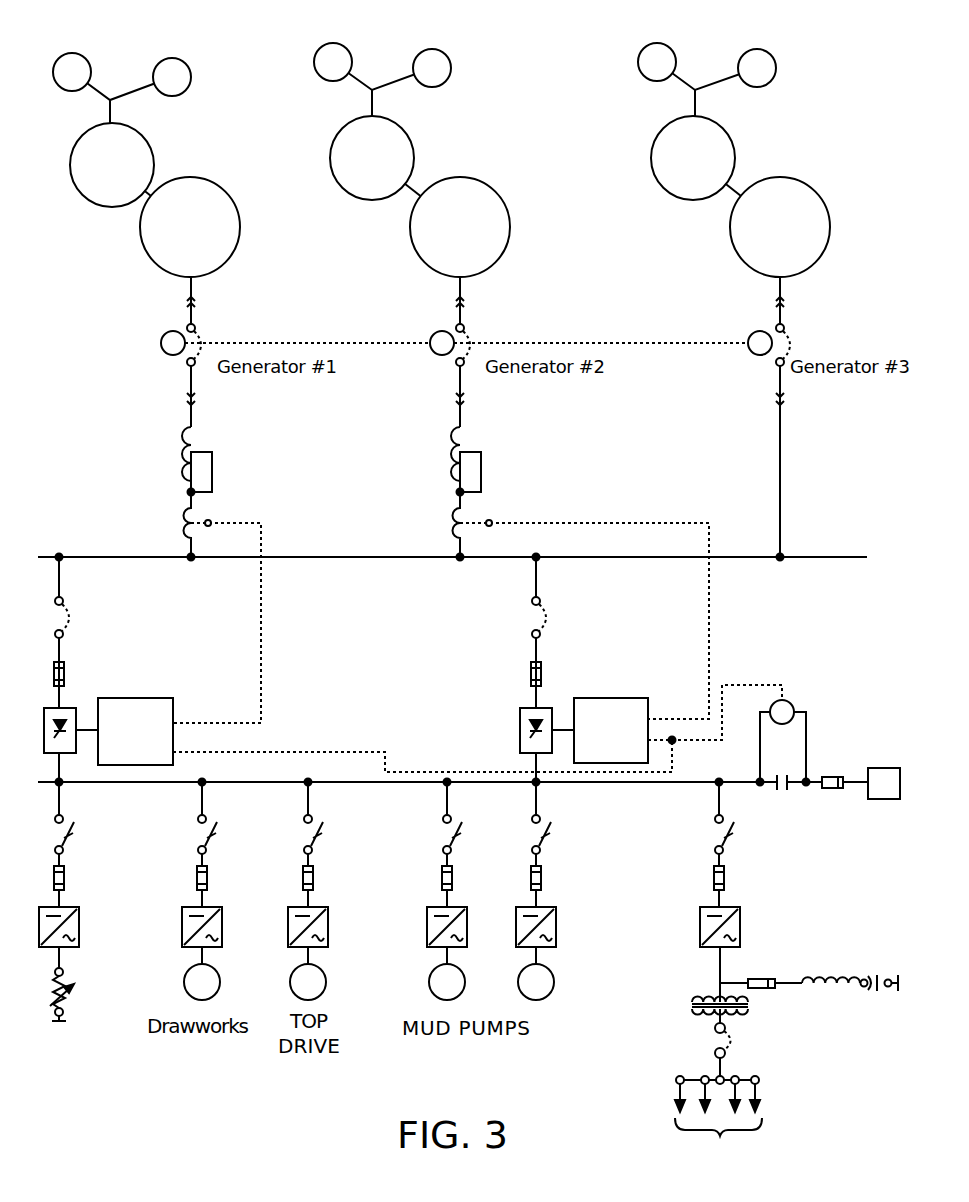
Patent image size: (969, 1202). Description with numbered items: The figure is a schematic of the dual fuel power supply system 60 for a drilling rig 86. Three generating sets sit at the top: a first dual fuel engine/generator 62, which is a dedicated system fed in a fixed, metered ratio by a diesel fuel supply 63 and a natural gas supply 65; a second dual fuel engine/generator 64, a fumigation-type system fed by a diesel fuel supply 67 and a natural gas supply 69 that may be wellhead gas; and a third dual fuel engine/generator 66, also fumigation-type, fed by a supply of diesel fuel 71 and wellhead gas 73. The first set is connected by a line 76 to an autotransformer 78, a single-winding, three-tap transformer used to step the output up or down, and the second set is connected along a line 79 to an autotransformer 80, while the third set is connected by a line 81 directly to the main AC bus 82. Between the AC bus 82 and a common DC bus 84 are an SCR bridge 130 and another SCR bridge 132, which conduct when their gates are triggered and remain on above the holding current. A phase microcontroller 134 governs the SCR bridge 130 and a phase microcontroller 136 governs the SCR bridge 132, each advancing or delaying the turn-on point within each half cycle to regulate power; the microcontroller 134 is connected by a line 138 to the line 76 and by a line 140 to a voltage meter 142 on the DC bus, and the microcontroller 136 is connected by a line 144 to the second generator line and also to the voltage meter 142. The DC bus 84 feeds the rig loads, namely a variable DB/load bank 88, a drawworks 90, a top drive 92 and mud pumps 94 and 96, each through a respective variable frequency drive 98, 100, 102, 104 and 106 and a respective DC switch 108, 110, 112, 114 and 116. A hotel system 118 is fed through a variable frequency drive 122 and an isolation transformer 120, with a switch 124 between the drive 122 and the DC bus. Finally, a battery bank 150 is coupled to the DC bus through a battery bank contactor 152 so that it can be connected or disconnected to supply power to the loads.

The power supply system 60 is at (822, 622).
The first dual fuel engine/generator 62 is at (125, 220).
The diesel fuel supply 63 is at (83, 55).
The second dual fuel engine/generator 64 is at (394, 211).
The natural gas supply 65 is at (190, 71).
The third dual fuel engine/generator 66 is at (716, 211).
The diesel fuel supply 67 is at (345, 46).
The natural gas supply 69 is at (451, 63).
The supply of diesel fuel 71 is at (669, 47).
The wellhead gas 73 is at (775, 63).
The line 76 is at (183, 397).
The autotransformer 78 is at (189, 477).
The line 79 is at (455, 398).
The autotransformer 80 is at (455, 472).
The line 81 is at (780, 445).
The main AC bus 82 is at (758, 557).
The common DC bus 84 is at (699, 782).
The drilling rig 86 is at (384, 1031).
The variable DB/load bank 88 is at (75, 993).
The drawworks 90 is at (222, 977).
The top drive 92 is at (326, 985).
The mud pump 94 is at (465, 982).
The mud pump 96 is at (557, 982).
The variable frequency drive 98 is at (82, 927).
The variable frequency drive 100 is at (182, 930).
The variable frequency drive 102 is at (328, 927).
The variable frequency drive 104 is at (425, 930).
The variable frequency drive 106 is at (557, 927).
The DC switch 108 is at (80, 825).
The DC switch 110 is at (200, 835).
The DC switch 112 is at (307, 833).
The DC switch 114 is at (443, 838).
The DC switch 116 is at (547, 817).
The hotel system 118 is at (672, 1097).
The isolation transformer 120 is at (753, 1008).
The variable frequency drive 122 is at (698, 928).
The switch 124 is at (715, 835).
The SCR bridge 130 is at (68, 707).
The SCR bridge 132 is at (520, 719).
The phase microcontroller 134 is at (147, 697).
The phase microcontroller 136 is at (620, 697).
The line 138 is at (263, 620).
The line 140 is at (332, 750).
The voltage meter 142 is at (787, 699).
The line 144 is at (710, 605).
The battery bank 150 is at (885, 800).
The battery bank contactor 152 is at (782, 795).